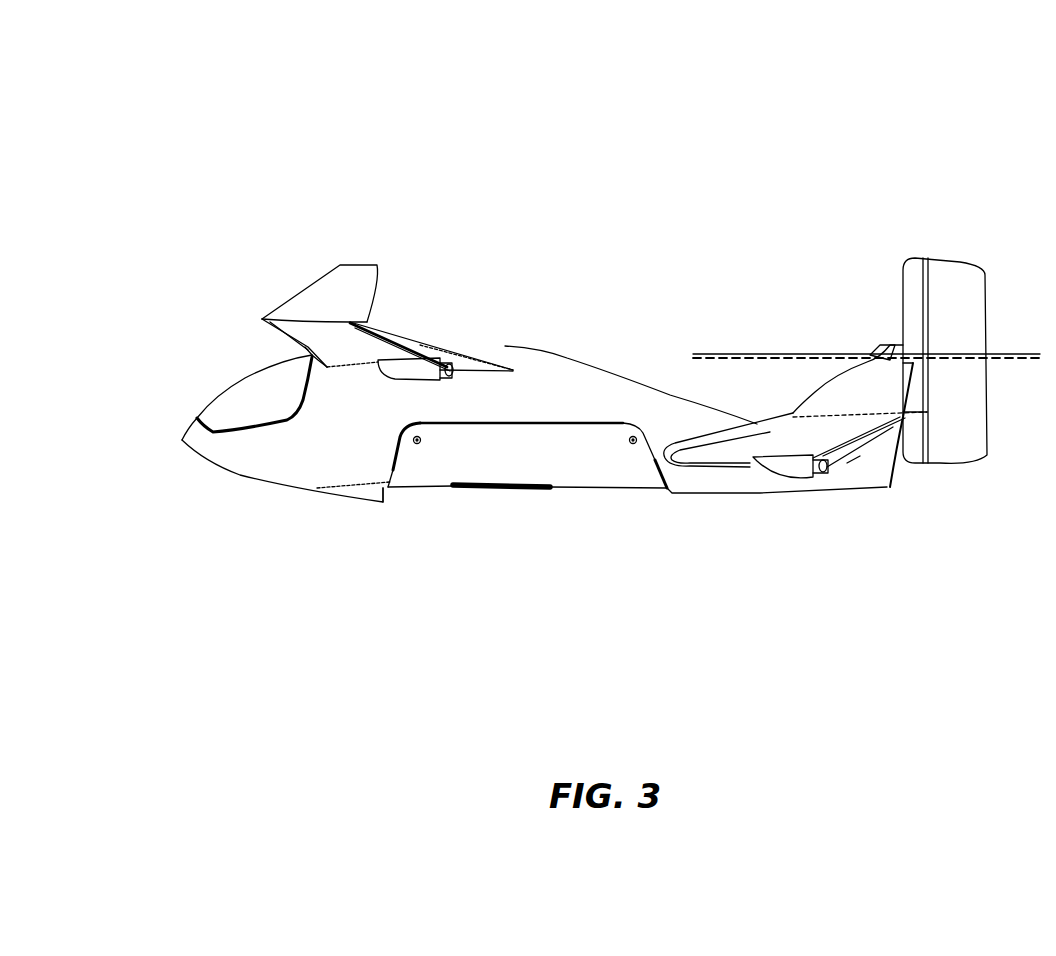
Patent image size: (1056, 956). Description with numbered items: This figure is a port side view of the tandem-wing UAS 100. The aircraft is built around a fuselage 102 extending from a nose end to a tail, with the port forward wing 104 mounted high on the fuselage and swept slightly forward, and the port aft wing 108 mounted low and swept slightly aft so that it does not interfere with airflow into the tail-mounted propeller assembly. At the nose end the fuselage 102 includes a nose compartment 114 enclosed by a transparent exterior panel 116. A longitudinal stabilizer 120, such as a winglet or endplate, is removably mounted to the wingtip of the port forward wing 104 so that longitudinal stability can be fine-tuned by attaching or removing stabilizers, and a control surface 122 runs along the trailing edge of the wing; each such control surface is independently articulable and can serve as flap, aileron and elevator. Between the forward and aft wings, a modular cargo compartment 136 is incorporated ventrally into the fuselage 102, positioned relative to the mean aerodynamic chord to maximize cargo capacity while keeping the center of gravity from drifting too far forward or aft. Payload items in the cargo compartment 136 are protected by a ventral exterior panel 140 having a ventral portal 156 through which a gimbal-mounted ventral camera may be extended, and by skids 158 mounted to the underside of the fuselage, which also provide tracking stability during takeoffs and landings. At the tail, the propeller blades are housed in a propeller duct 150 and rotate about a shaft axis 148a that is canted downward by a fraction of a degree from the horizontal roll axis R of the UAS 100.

The tandem-wing UAS 100 is at (148, 110).
The fuselage 102 is at (553, 360).
The port forward wing 104 is at (303, 347).
The port aft wing 108 is at (753, 442).
The nose compartment 114 is at (322, 609).
The transparent exterior panel 116 is at (233, 397).
The longitudinal stabilizer 120 is at (322, 286).
The control surface 122 is at (383, 330).
The modular cargo compartment 136 is at (388, 609).
The ventral exterior panel 140 is at (587, 483).
The shaft axis 148a is at (710, 362).
The propeller duct 150 is at (950, 273).
The ventral portal 156 is at (500, 490).
The skid 158 is at (370, 490).
The roll axis R is at (740, 357).